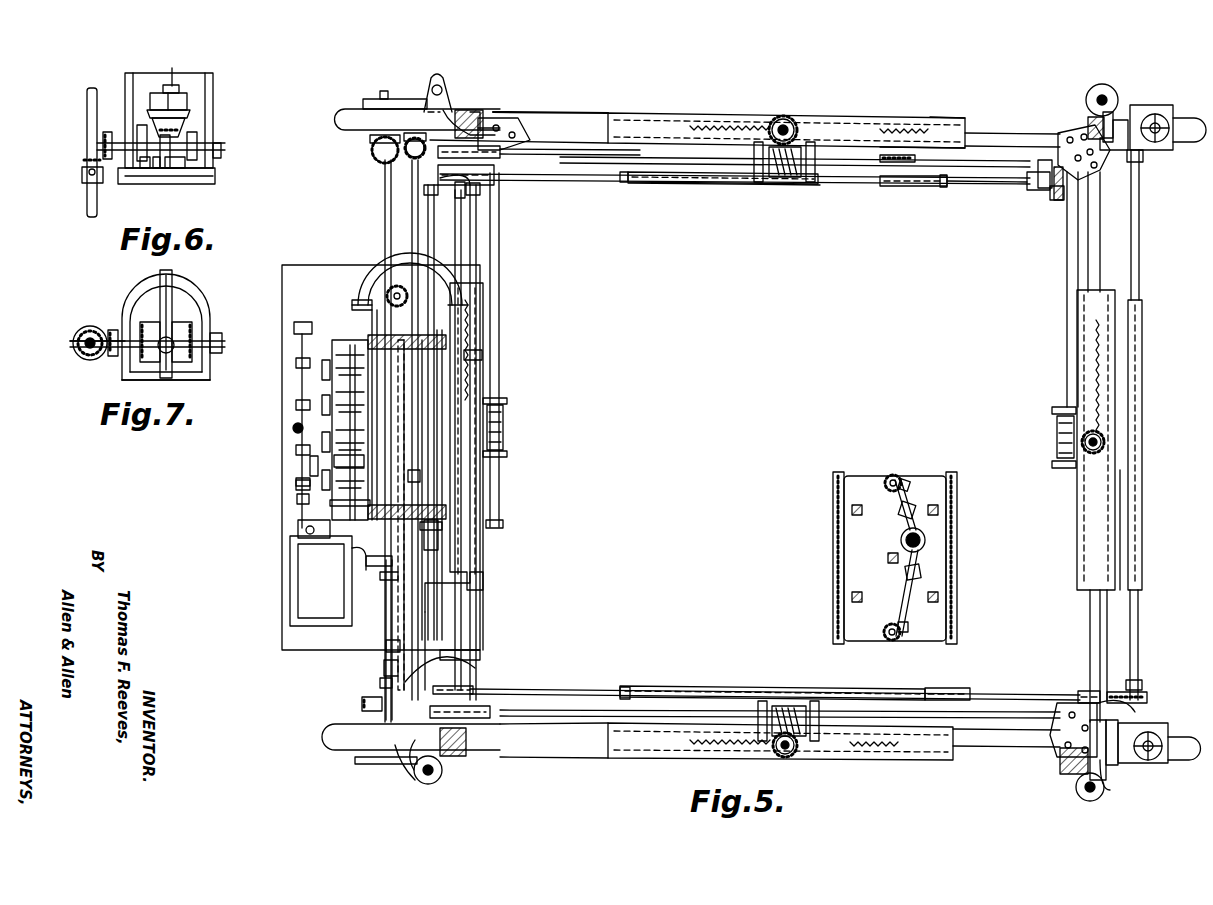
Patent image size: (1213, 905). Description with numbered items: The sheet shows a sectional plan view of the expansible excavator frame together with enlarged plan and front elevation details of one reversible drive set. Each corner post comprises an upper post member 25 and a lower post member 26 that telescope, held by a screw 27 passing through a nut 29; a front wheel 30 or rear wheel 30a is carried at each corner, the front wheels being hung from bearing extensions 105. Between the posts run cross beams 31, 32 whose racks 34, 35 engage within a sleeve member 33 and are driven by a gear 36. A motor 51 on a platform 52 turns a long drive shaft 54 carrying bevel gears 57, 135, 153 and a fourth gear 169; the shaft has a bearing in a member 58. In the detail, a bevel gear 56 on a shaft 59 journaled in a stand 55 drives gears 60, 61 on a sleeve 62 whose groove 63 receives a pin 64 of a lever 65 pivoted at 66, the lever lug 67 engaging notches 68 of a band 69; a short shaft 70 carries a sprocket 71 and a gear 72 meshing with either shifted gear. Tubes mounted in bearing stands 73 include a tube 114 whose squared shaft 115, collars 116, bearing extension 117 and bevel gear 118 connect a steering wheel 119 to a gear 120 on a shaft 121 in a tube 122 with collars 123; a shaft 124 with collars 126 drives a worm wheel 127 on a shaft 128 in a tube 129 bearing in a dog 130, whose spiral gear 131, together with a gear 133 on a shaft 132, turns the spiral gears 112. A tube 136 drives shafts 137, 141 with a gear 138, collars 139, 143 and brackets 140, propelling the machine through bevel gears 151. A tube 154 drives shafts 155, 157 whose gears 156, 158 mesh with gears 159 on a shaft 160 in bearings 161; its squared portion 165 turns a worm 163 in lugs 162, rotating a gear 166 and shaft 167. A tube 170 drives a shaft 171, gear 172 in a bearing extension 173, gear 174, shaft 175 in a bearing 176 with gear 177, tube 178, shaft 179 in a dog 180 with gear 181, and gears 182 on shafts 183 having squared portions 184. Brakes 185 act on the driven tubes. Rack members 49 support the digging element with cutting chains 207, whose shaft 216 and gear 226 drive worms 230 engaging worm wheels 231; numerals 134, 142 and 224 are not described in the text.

In FIG. 5, the upper post member 25 is at (478, 112).
In FIG. 5, the lower post member 26 is at (490, 118).
In FIG. 5, the screw 27 is at (438, 776).
In FIG. 5, the nut 29 is at (455, 760).
In FIG. 5, the front wheel 30 is at (1182, 142).
In FIG. 5, the rear wheel 30a is at (335, 110).
In FIG. 5, the cross beam 31 is at (1010, 134).
In FIG. 5, the cross beam 32 is at (586, 113).
In FIG. 5, the sleeve member 33 is at (932, 115).
In FIG. 5, the rack 34 is at (876, 116).
In FIG. 5, the rack 35 is at (750, 115).
In FIG. 5, the gear 36 is at (1103, 442).
In FIG. 5, the rack member 49 is at (850, 500).
In FIG. 5, the motor 51 is at (290, 622).
In FIG. 5, the platform 52 is at (298, 266).
In FIG. 6, the drive shaft 54 is at (87, 96).
In FIG. 7, the drive shaft 54 is at (74, 350).
In FIG. 5, the drive shaft 54 is at (310, 466).
In FIG. 7, the stand 55 is at (122, 375).
In FIG. 5, the stand 55 is at (330, 505).
In FIG. 6, the bevel gear 56 is at (104, 136).
In FIG. 7, the bevel gear 56 is at (108, 332).
In FIG. 5, the bevel gear 56 is at (305, 480).
In FIG. 6, the bevel gear 57 is at (82, 162).
In FIG. 7, the bevel gear 57 is at (74, 340).
In FIG. 5, the bevel gear 57 is at (304, 496).
In FIG. 5, the bearing member 58 is at (296, 338).
In FIG. 6, the shaft 59 is at (221, 150).
In FIG. 7, the shaft 59 is at (216, 332).
In FIG. 6, the gear 60 is at (188, 132).
In FIG. 6, the gear 61 is at (140, 138).
In FIG. 6, the sleeve 62 is at (178, 168).
In FIG. 6, the groove 63 is at (197, 150).
In FIG. 6, the pin 64 is at (154, 168).
In FIG. 6, the lever 65 is at (163, 168).
In FIG. 7, the lever 65 is at (158, 300).
In FIG. 7, the pivot 66 is at (168, 372).
In FIG. 7, the lug 67 is at (172, 292).
In FIG. 6, the notches 68 is at (140, 166).
In FIG. 6, the band 69 is at (200, 178).
In FIG. 7, the band 69 is at (122, 300).
In FIG. 6, the short shaft 70 is at (172, 78).
In FIG. 6, the sprocket 71 is at (190, 110).
In FIG. 5, the sprocket 71 is at (324, 452).
In FIG. 6, the gear 72 is at (192, 118).
In FIG. 5, the bearing stand 73 is at (368, 342).
In FIG. 5, the bearing extension 105 is at (1148, 105).
In FIG. 5, the spiral gear 112 is at (1164, 118).
In FIG. 5, the tube 114 is at (440, 538).
In FIG. 5, the squared shaft 115 is at (440, 622).
In FIG. 5, the collars 116 is at (398, 648).
In FIG. 5, the bearing extension 117 is at (440, 660).
In FIG. 5, the bevel gear 118 is at (384, 670).
In FIG. 5, the steering wheel 119 is at (372, 266).
In FIG. 5, the gear 120 is at (380, 683).
In FIG. 5, the shaft 121 is at (595, 690).
In FIG. 5, the tube 122 is at (730, 688).
In FIG. 5, the collars 123 is at (490, 688).
In FIG. 5, the shaft 124 is at (998, 692).
In FIG. 5, the collars 126 is at (1082, 690).
In FIG. 5, the worm wheel 127 is at (1145, 684).
In FIG. 5, the shaft 128 is at (1140, 600).
In FIG. 5, the tube 129 is at (1140, 510).
In FIG. 5, the dog 130 is at (1156, 700).
In FIG. 5, the spiral gear 131 is at (1116, 770).
In FIG. 5, the shaft 132 is at (1140, 222).
In FIG. 5, the gear 133 is at (1118, 115).
In FIG. 5, the block 134 is at (355, 305).
In FIG. 5, the second bevel gear 135 is at (324, 438).
In FIG. 5, the tube 136 is at (317, 547).
In FIG. 5, the shaft 137 is at (378, 628).
In FIG. 5, the gear 138 is at (362, 703).
In FIG. 5, the collars 139 is at (358, 760).
In FIG. 5, the bracket 140 is at (410, 120).
In FIG. 5, the shaft 141 is at (383, 208).
In FIG. 5, the gear 142 is at (372, 140).
In FIG. 5, the collars 143 is at (372, 100).
In FIG. 5, the bevel gear 151 is at (385, 158).
In FIG. 5, the third bevel gear 153 is at (330, 402).
In FIG. 5, the tube 154 is at (450, 478).
In FIG. 5, the shaft 155 is at (430, 606).
In FIG. 5, the gear 156 is at (395, 745).
In FIG. 5, the shaft 157 is at (410, 230).
In FIG. 5, the gear 158 is at (455, 110).
In FIG. 5, the gear 159 is at (430, 178).
In FIG. 5, the shaft 160 is at (600, 152).
In FIG. 5, the bearings 161 is at (500, 148).
In FIG. 5, the lugs 162 is at (814, 178).
In FIG. 5, the worm 163 is at (790, 175).
In FIG. 5, the squared portion 165 is at (718, 165).
In FIG. 5, the gear 166 is at (790, 120).
In FIG. 5, the shaft 167 is at (783, 756).
In FIG. 5, the fourth gear 169 is at (296, 362).
In FIG. 5, the tube 170 is at (440, 372).
In FIG. 5, the shaft 171 is at (425, 245).
In FIG. 5, the gear 172 is at (432, 200).
In FIG. 5, the bearing extension 173 is at (462, 195).
In FIG. 5, the gear 174 is at (472, 186).
In FIG. 5, the shaft 175 is at (612, 178).
In FIG. 5, the bearing 176 is at (482, 180).
In FIG. 5, the gear 177 is at (610, 178).
In FIG. 5, the tube 178 is at (765, 183).
In FIG. 5, the shaft 179 is at (1010, 186).
In FIG. 5, the dog 180 is at (1040, 166).
In FIG. 5, the gear 181 is at (1050, 190).
In FIG. 5, the gear 182 is at (575, 202).
In FIG. 5, the shaft 183 is at (500, 285).
In FIG. 5, the squared portion 184 is at (494, 348).
In FIG. 5, the brake 185 is at (356, 570).
In FIG. 5, the cutting chain 207 is at (838, 552).
In FIG. 5, the shaft 216 is at (928, 535).
In FIG. 5, the block 224 is at (890, 560).
In FIG. 5, the gear 226 is at (900, 534).
In FIG. 5, the worm 230 is at (908, 470).
In FIG. 5, the worm wheel 231 is at (890, 472).